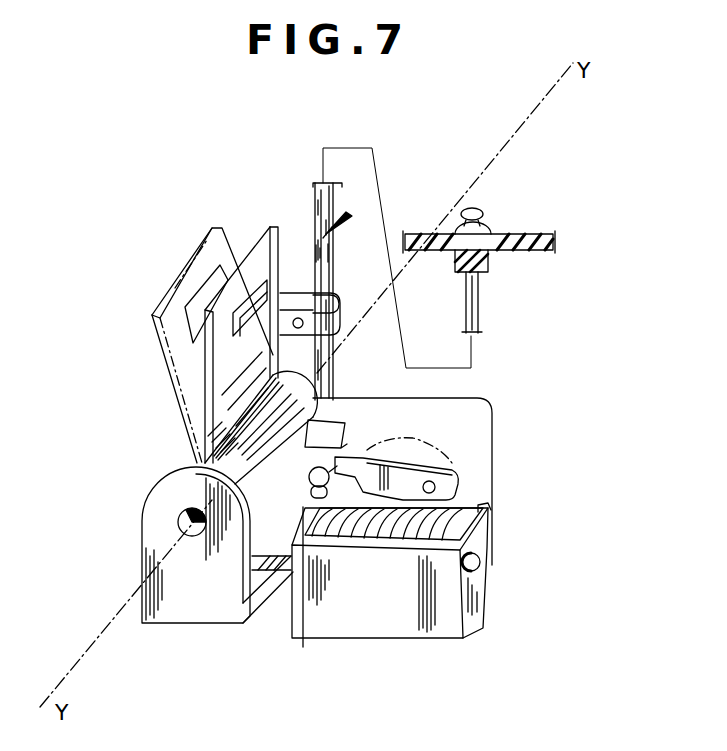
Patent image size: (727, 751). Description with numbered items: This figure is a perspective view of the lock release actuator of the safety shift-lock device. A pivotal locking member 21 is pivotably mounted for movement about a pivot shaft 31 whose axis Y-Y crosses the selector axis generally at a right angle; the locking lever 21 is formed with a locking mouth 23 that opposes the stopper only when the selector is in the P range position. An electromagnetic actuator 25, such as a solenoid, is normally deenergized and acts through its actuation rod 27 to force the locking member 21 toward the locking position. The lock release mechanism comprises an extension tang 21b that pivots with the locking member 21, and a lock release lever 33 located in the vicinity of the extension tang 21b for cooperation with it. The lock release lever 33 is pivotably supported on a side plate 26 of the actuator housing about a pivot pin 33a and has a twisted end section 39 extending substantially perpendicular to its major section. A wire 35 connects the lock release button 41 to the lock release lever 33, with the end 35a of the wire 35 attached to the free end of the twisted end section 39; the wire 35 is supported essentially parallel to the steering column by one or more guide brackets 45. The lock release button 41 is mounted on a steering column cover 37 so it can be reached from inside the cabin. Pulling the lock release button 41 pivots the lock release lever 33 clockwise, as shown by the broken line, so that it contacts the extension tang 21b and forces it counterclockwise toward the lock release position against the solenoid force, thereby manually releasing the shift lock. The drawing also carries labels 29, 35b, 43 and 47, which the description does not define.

The pivotal locking member 21 is at (272, 232).
The extension tang 21b is at (340, 445).
The locking mouth 23 is at (235, 350).
The electromagnetic actuator 25 is at (413, 618).
The side plate 26 is at (487, 413).
The actuation rod 27 is at (230, 627).
The adjusting mechanism 29 is at (513, 212).
The pivot shaft 31 is at (178, 527).
The lock release lever 33 is at (435, 486).
The pivot pin 33a is at (478, 505).
The wire 35 is at (338, 228).
The end of the wire 35a is at (292, 595).
The rod head block 35b is at (517, 276).
The steering column cover 37 is at (535, 236).
The twisted end section 39 is at (340, 468).
The lock release button 41 is at (472, 209).
The direction arrow 43 is at (348, 212).
The guide bracket 45 is at (339, 330).
The sleeve 47 is at (363, 257).